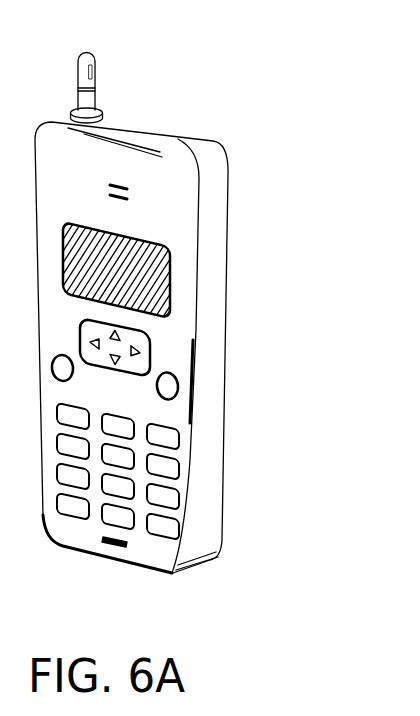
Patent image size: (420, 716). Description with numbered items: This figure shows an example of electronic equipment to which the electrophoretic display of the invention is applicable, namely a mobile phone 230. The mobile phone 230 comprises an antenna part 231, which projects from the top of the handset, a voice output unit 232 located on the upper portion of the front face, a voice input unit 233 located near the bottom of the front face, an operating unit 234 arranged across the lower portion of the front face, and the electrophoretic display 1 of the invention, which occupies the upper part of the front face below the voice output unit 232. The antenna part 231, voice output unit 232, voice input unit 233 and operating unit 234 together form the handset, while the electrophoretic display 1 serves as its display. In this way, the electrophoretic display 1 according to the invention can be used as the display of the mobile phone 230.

The mobile phone 230 is at (282, 163).
The antenna part 231 is at (95, 58).
The voice output unit 232 is at (125, 186).
The voice input unit 233 is at (127, 544).
The operating unit 234 is at (242, 540).
The electrophoretic display 1 is at (163, 291).